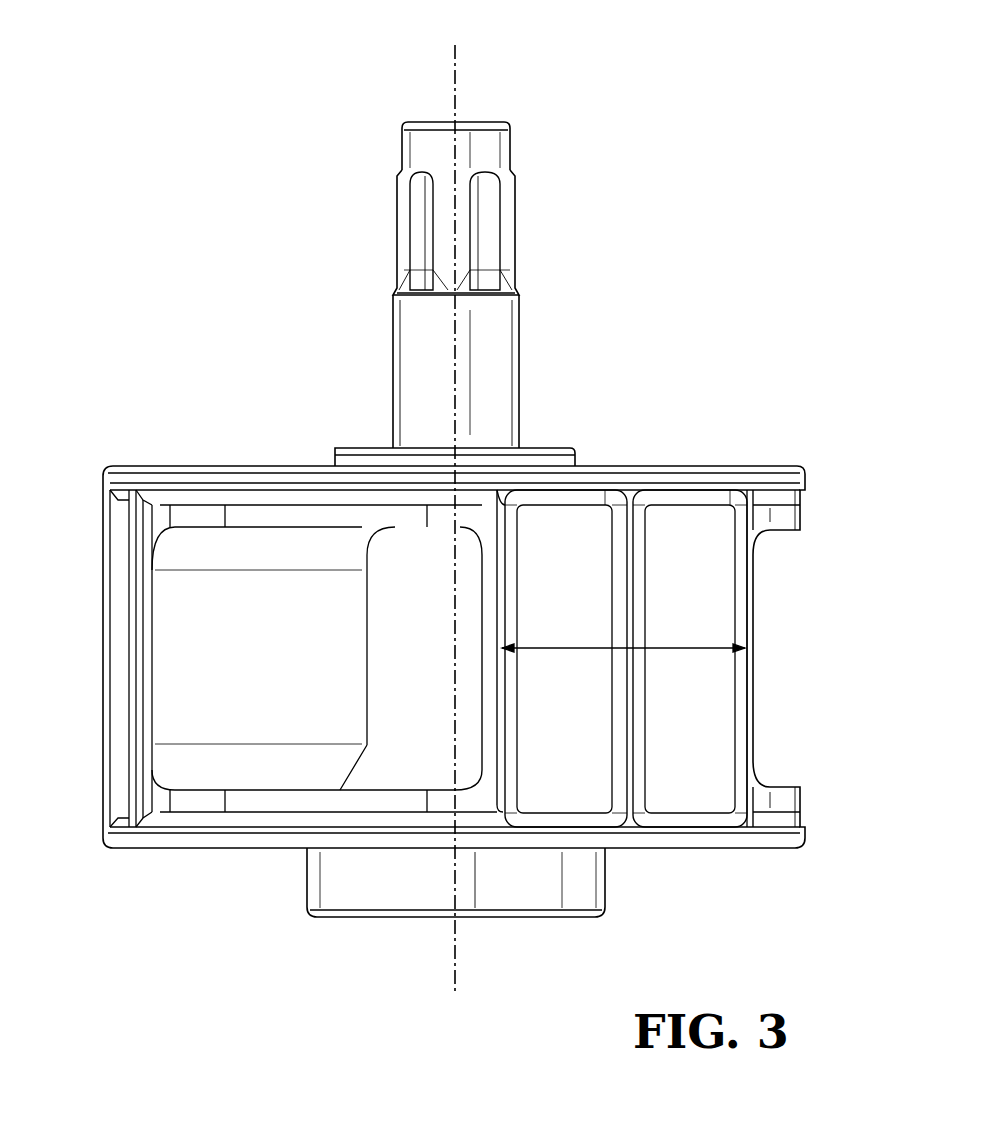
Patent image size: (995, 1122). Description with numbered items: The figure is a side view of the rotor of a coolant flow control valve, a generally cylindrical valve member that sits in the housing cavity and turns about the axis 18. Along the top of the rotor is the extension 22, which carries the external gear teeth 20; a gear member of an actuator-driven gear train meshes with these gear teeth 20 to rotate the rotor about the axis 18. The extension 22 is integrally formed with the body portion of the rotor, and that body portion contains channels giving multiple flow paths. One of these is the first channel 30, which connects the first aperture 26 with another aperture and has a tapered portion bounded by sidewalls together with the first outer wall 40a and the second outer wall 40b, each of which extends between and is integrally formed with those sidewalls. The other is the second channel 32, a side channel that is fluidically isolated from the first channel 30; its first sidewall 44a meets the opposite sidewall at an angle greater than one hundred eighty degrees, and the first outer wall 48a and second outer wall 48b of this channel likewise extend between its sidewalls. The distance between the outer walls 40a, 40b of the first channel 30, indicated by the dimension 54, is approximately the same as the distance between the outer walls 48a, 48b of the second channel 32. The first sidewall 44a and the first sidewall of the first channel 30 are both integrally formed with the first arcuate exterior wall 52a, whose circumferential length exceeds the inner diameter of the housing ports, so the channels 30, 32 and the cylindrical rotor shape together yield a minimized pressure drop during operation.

The axis 18 is at (457, 80).
The external gear teeth 20 is at (492, 190).
The extension 22 is at (503, 360).
The first aperture 26 is at (800, 790).
The first channel 30 is at (784, 600).
The second channel 32 is at (174, 668).
The first outer wall 40a is at (778, 538).
The second outer wall 40b is at (778, 777).
The first sidewall 44a is at (160, 615).
The first outer wall 48a is at (362, 538).
The second outer wall 48b is at (320, 790).
The first arcuate exterior wall 52a is at (688, 518).
The width dimension 54 is at (718, 650).